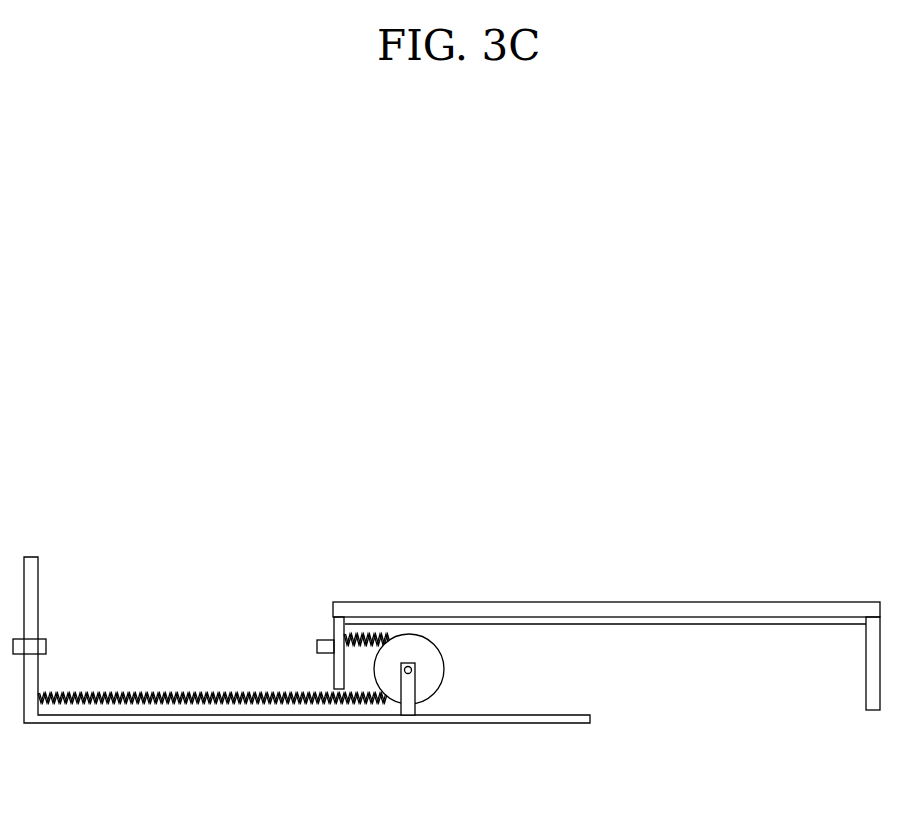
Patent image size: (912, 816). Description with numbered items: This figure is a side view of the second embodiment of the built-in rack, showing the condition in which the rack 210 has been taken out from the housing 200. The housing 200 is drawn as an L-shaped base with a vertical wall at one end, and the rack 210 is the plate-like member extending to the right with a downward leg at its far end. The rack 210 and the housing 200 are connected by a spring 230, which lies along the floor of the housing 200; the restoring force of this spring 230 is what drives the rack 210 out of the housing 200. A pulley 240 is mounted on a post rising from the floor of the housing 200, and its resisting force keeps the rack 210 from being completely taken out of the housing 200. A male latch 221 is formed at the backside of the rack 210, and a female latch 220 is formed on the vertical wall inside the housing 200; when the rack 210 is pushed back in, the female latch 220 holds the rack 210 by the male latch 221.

The housing 200 is at (30, 586).
The built-in rack 210 is at (650, 609).
The female latch 220 is at (44, 647).
The male latch 221 is at (314, 644).
The spring 230 is at (140, 703).
The pulley 240 is at (427, 672).